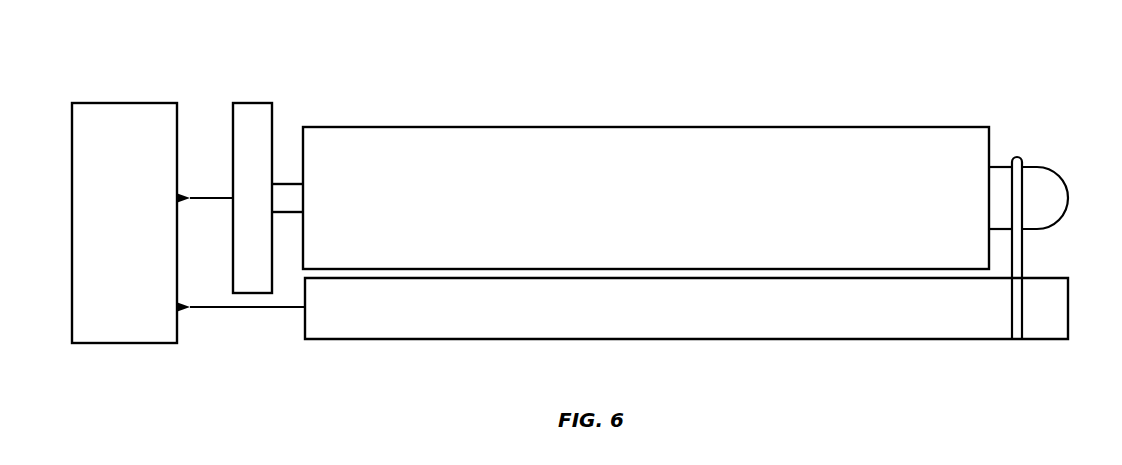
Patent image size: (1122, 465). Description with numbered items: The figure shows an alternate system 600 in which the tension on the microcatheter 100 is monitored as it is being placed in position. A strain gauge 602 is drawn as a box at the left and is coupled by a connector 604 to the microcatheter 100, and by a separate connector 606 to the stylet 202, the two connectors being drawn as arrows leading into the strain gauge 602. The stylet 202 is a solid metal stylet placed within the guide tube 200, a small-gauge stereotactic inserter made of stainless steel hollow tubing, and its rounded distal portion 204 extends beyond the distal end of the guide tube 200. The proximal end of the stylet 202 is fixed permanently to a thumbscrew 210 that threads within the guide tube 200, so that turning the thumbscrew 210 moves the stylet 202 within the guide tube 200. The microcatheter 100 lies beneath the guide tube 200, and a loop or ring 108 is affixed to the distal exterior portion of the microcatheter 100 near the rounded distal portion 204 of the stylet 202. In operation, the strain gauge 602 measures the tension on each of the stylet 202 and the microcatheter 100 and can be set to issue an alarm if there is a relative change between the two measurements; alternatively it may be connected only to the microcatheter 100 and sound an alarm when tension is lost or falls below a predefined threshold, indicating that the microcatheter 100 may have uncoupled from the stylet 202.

The system 600 is at (821, 76).
The strain gauge 602 is at (124, 223).
The thumbscrew 210 is at (255, 125).
The connector 606 is at (216, 195).
The connector 604 is at (278, 310).
The guide tube 200 is at (710, 126).
The microcatheter 100 is at (686, 308).
The stylet 202 is at (1003, 165).
The rounded distal portion 204 is at (1050, 179).
The loop or ring 108 is at (1017, 247).